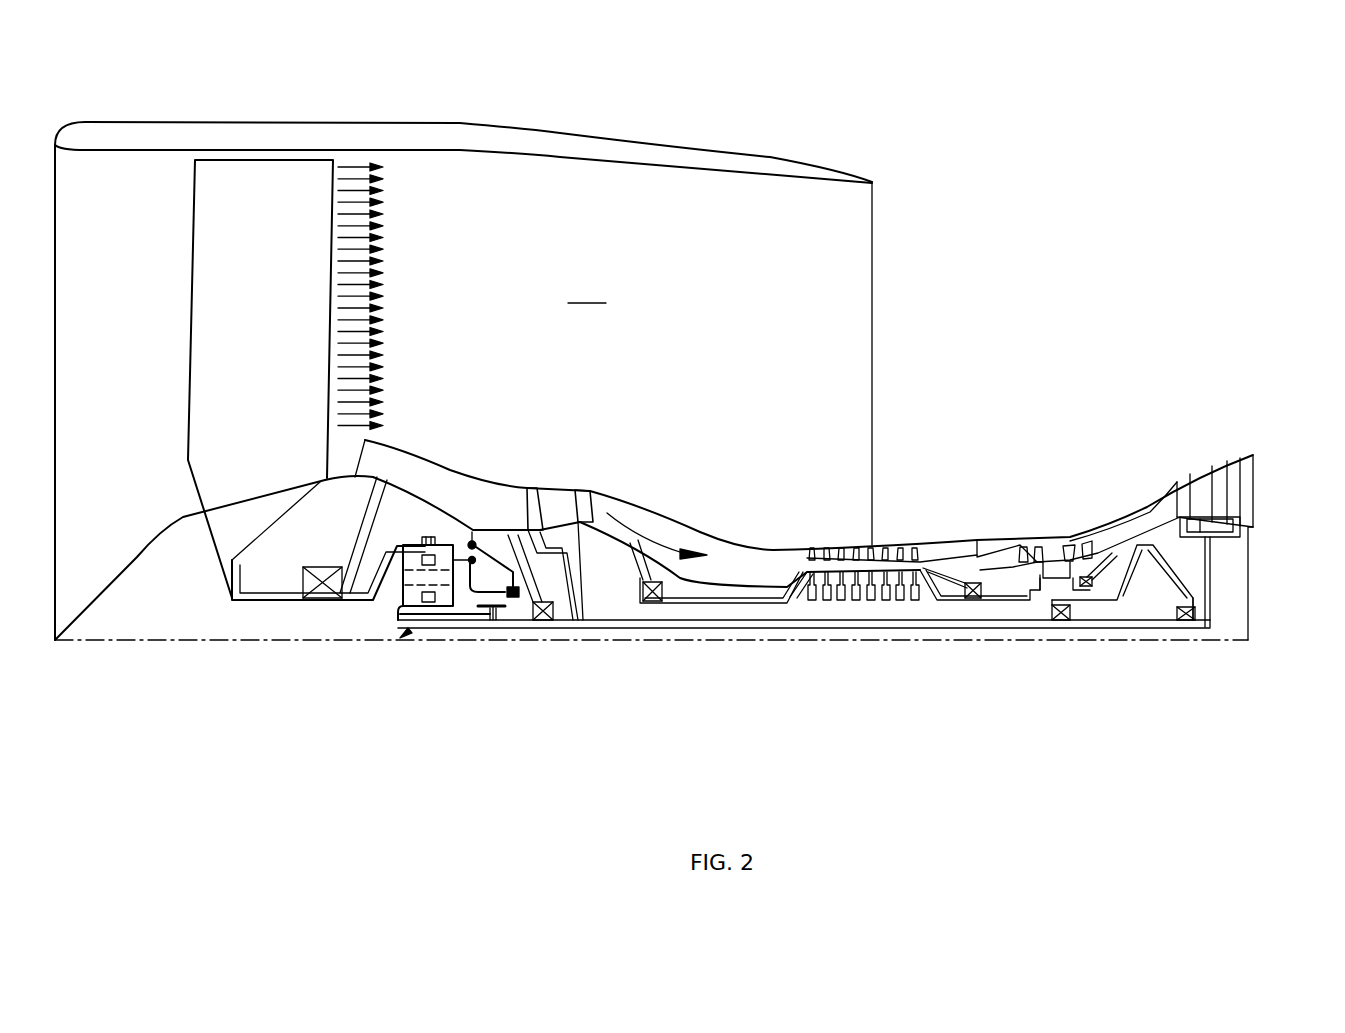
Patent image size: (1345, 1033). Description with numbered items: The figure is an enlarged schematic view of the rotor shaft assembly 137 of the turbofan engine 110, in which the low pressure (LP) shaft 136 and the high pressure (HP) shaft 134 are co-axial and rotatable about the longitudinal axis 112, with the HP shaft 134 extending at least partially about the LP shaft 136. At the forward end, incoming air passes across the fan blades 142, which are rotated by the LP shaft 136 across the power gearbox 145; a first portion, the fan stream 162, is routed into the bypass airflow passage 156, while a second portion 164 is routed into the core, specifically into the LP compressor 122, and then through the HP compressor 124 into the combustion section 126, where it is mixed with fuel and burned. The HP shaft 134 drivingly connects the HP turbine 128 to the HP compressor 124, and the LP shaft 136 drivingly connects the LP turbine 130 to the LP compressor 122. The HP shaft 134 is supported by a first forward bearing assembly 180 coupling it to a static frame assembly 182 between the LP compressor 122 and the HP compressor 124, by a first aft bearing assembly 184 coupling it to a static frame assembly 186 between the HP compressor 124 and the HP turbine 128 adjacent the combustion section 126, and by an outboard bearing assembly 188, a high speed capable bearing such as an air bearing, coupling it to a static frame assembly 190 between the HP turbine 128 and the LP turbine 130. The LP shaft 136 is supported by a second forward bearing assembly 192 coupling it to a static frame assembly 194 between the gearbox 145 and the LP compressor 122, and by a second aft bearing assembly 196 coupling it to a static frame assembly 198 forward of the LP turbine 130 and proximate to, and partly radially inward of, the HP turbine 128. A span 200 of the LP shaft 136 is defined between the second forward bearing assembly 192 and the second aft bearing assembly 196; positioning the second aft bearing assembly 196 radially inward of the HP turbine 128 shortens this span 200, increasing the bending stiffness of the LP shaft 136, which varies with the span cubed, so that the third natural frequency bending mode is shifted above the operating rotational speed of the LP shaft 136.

The turbofan engine 110 is at (835, 124).
The longitudinal axis 112 is at (100, 642).
The low pressure (LP) compressor 122 is at (523, 480).
The high pressure (HP) compressor 124 is at (927, 538).
The combustion section 126 is at (1003, 538).
The high pressure (HP) turbine 128 is at (1098, 560).
The low pressure (LP) turbine 130 is at (1173, 448).
The high pressure (HP) shaft 134 is at (740, 600).
The low pressure (LP) shaft 136 is at (494, 624).
The shaft assembly 137 is at (1257, 610).
The fan blades 142 is at (192, 212).
The power gearbox 145 is at (404, 636).
The bypass airflow passage 156 is at (587, 290).
The fan stream 162 is at (358, 218).
The second portion of air 164 is at (657, 537).
The first forward bearing assembly 180 is at (672, 632).
The static frame assembly 182 is at (652, 605).
The first aft bearing assembly 184 is at (972, 602).
The static frame assembly 186 is at (965, 580).
The outboard bearing assembly 188 is at (1083, 575).
The static frame assembly 190 is at (1103, 555).
The second forward bearing assembly 192 is at (552, 625).
The static frame assembly 194 is at (472, 540).
The second aft bearing assembly 196 is at (1185, 624).
The static frame assembly 198 is at (1167, 568).
The span 200 is at (543, 630).